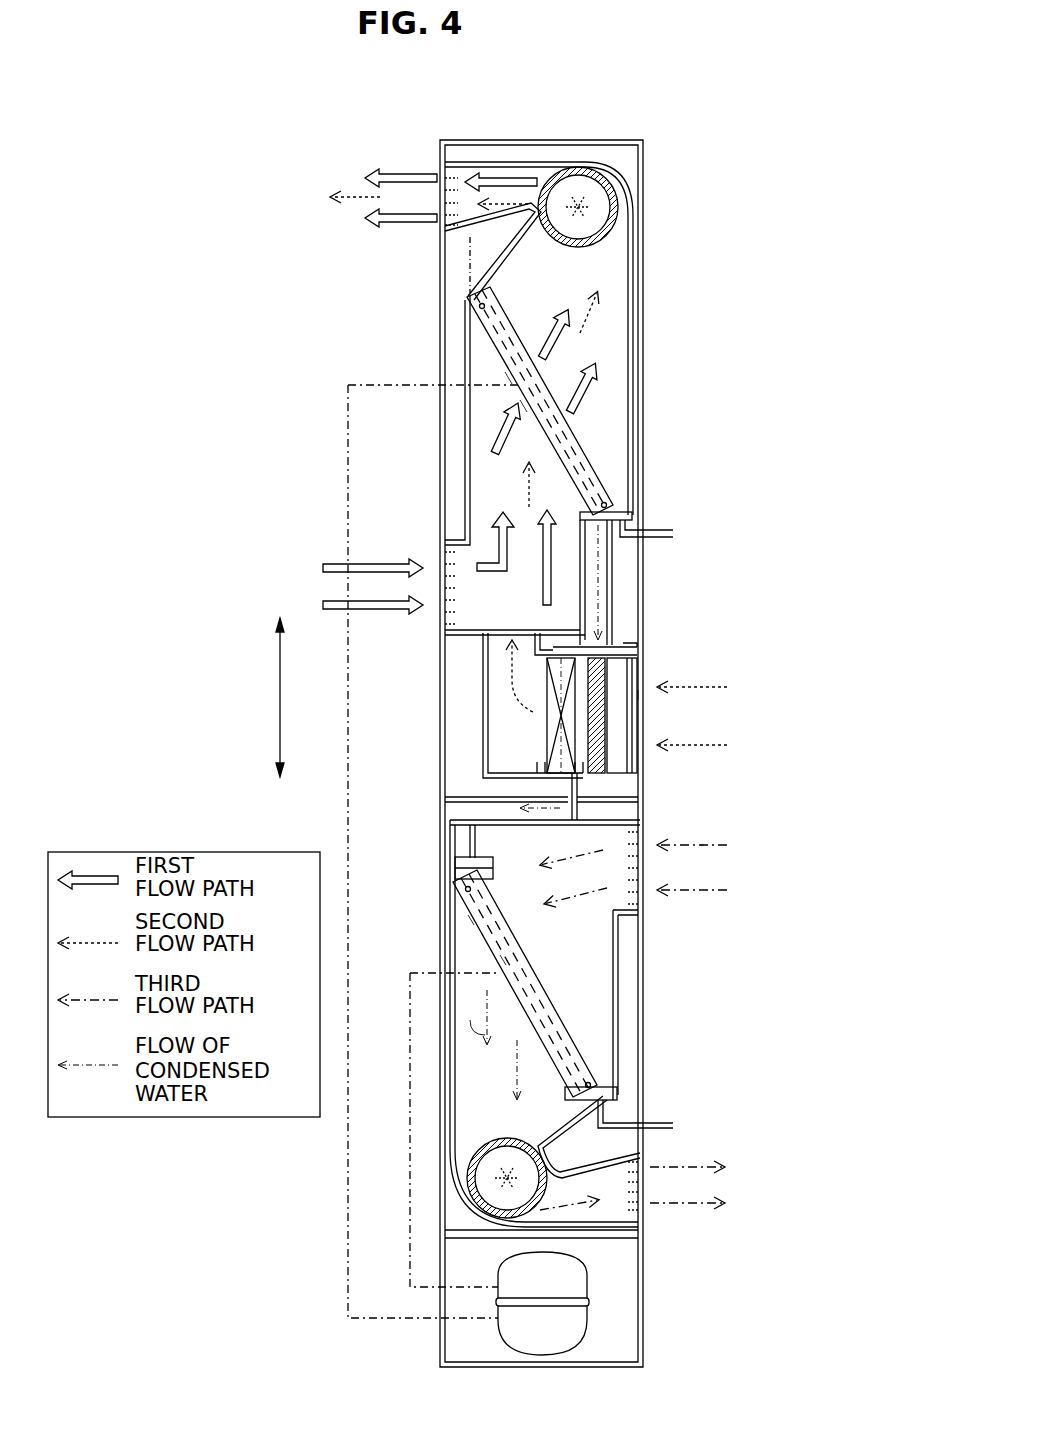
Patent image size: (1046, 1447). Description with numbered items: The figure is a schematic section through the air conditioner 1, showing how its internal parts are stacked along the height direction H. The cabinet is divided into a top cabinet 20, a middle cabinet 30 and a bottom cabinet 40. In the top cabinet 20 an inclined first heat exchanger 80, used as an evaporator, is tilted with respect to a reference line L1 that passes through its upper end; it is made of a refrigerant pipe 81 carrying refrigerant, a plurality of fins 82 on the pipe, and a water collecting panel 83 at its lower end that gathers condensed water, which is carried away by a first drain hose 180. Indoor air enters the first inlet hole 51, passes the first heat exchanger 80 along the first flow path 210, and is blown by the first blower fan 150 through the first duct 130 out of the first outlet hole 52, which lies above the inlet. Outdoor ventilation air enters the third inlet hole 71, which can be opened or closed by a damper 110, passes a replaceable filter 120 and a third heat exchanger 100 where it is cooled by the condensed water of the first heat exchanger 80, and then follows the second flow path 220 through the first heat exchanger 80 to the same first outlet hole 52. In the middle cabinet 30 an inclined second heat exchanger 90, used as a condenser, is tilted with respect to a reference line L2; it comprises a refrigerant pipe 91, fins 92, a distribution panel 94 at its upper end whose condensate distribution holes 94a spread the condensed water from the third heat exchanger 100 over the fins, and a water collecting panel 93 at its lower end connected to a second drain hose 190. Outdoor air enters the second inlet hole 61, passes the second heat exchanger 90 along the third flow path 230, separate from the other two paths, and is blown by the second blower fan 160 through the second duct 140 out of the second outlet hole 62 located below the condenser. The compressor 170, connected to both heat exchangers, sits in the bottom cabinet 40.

The air conditioner 1 is at (746, 135).
The top cabinet 20 is at (644, 264).
The middle cabinet 30 is at (644, 1001).
The bottom cabinet 40 is at (644, 1280).
The first inlet hole 51 is at (450, 592).
The first outlet hole 52 is at (440, 182).
The second inlet hole 61 is at (637, 872).
The second outlet hole 62 is at (633, 1182).
The third inlet hole 71 is at (640, 708).
The first heat exchanger 80 is at (580, 440).
The refrigerant pipe 81 is at (528, 400).
The fins 82 is at (508, 373).
The water collecting panel 83 is at (622, 497).
The second heat exchanger 90 is at (555, 997).
The refrigerant pipe 91 is at (468, 915).
The fins 92 is at (500, 955).
The water collecting panel 93 is at (618, 1073).
The distribution panel 94 is at (462, 847).
The condensate distribution holes 94a is at (455, 868).
The third heat exchanger 100 is at (548, 725).
The damper 110 is at (628, 675).
The filter 120 is at (598, 765).
The first duct 130 is at (620, 167).
The second duct 140 is at (620, 1030).
The first blower fan 150 is at (600, 212).
The second blower fan 160 is at (472, 1168).
The compressor 170 is at (567, 1330).
The first drain hose 180 is at (660, 538).
The second drain hose 190 is at (660, 1120).
The first flow path 210 is at (625, 378).
The second flow path 220 is at (505, 668).
The third flow path 230 is at (705, 845).
The reference line L1 is at (470, 268).
The reference line L2 is at (470, 1030).
The height direction H is at (267, 697).